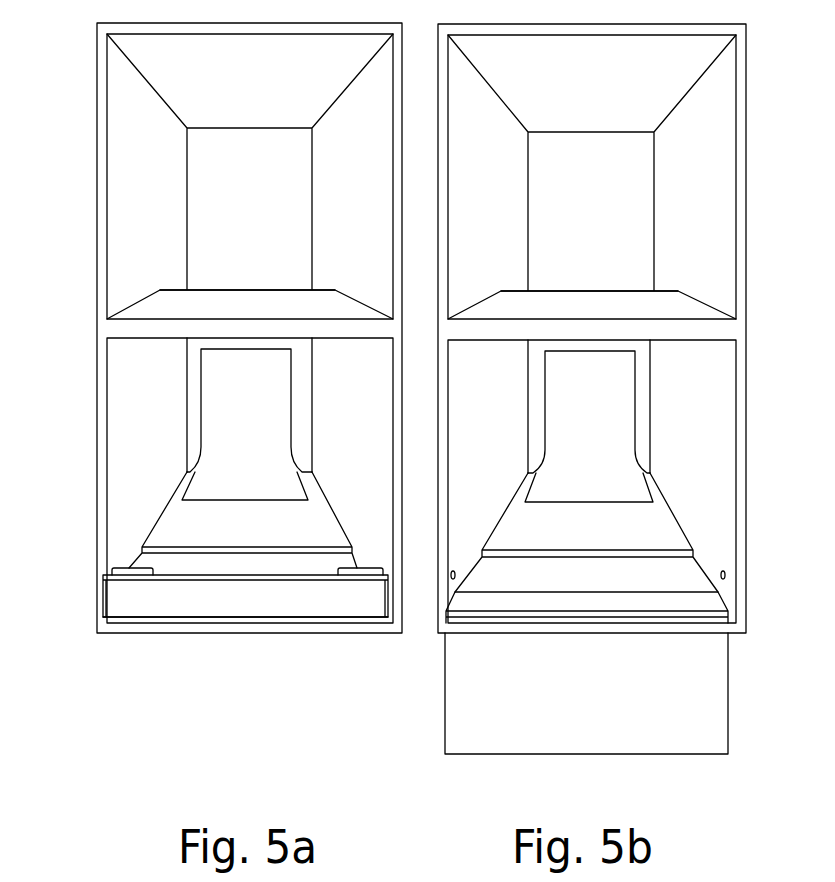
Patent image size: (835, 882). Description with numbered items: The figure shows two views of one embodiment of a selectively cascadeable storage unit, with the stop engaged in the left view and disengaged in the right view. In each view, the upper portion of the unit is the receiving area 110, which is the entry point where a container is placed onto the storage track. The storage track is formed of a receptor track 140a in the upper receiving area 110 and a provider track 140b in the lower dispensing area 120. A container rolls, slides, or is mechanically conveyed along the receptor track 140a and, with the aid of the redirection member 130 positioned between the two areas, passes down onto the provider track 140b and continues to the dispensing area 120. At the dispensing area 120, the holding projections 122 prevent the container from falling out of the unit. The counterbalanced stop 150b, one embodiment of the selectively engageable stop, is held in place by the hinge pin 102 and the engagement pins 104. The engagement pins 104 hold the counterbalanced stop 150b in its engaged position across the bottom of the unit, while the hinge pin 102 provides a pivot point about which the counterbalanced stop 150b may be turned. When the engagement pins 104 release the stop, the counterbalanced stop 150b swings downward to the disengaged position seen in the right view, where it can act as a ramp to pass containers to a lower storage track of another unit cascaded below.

In FIG. 5a, the receiving area 110 is at (131, 240).
In FIG. 5b, the receiving area 110 is at (718, 242).
In FIG. 5a, the dispensing area 120 is at (128, 514).
In FIG. 5b, the dispensing area 120 is at (722, 470).
In FIG. 5a, the redirection member 130 is at (200, 402).
In FIG. 5b, the redirection member 130 is at (635, 403).
In FIG. 5a, the receptor track 140a is at (248, 306).
In FIG. 5b, the receptor track 140a is at (592, 306).
In FIG. 5a, the provider track 140b is at (160, 511).
In FIG. 5b, the provider track 140b is at (646, 516).
In FIG. 5a, the engagement pins 104 is at (358, 567).
In FIG. 5b, the engagement pins 104 is at (454, 570).
In FIG. 5a, the holding projections 122 is at (107, 562).
In FIG. 5a, the counterbalanced stop 150b is at (188, 612).
In FIG. 5b, the counterbalanced stop 150b is at (448, 697).
In FIG. 5b, the hinge pin 102 is at (730, 618).